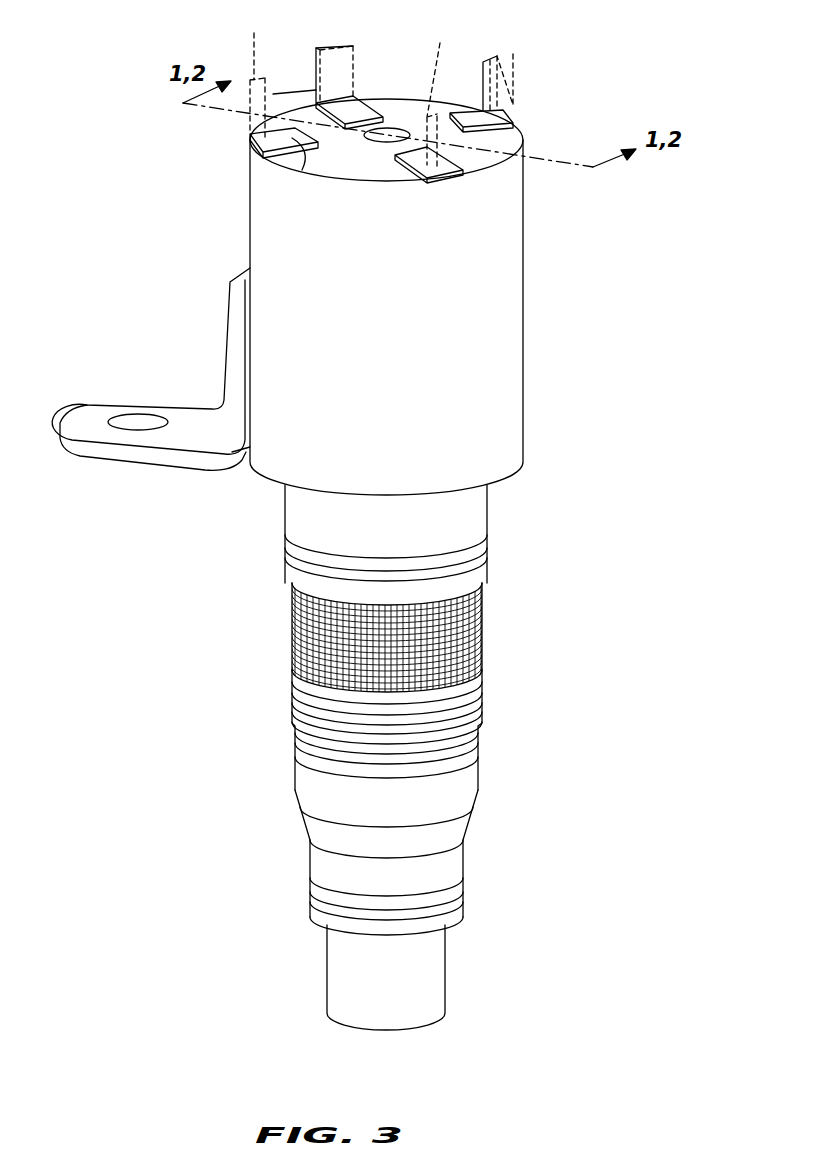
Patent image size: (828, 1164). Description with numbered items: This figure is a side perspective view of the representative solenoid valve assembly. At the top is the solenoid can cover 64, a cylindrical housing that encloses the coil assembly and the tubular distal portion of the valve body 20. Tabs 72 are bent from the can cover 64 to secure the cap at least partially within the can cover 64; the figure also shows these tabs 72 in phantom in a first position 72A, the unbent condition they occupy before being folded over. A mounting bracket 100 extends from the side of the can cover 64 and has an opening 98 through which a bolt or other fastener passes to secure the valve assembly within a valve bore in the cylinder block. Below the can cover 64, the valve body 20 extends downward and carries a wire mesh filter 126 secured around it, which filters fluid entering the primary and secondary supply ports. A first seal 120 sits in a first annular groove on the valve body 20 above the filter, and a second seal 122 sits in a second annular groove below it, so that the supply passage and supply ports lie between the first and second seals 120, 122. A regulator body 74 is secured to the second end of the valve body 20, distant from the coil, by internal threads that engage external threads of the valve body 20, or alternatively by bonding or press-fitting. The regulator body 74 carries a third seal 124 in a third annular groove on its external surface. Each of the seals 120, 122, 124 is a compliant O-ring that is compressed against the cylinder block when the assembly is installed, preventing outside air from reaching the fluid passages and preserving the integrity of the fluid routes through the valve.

The valve body 20 is at (432, 757).
The solenoid can cover 64 is at (473, 322).
The tabs 72 is at (345, 103).
The first position of tabs 72A is at (315, 65).
The regulator body 74 is at (433, 980).
The opening 98 is at (137, 423).
The mounting bracket 100 is at (151, 394).
The first seal 120 is at (487, 545).
The second seal 122 is at (473, 693).
The third seal 124 is at (455, 889).
The wire mesh filter 126 is at (487, 623).